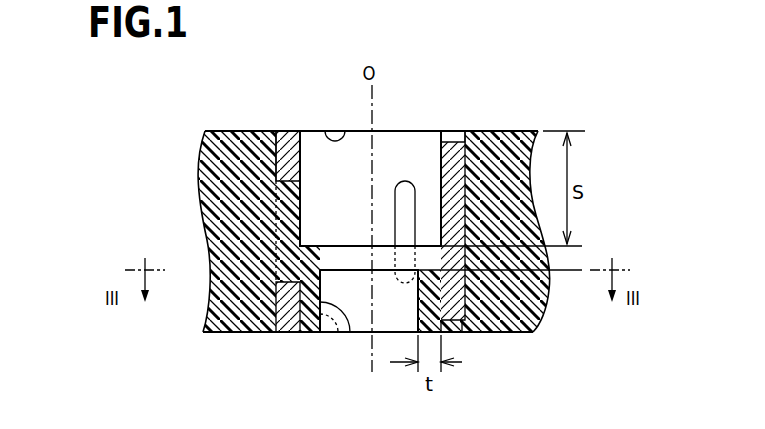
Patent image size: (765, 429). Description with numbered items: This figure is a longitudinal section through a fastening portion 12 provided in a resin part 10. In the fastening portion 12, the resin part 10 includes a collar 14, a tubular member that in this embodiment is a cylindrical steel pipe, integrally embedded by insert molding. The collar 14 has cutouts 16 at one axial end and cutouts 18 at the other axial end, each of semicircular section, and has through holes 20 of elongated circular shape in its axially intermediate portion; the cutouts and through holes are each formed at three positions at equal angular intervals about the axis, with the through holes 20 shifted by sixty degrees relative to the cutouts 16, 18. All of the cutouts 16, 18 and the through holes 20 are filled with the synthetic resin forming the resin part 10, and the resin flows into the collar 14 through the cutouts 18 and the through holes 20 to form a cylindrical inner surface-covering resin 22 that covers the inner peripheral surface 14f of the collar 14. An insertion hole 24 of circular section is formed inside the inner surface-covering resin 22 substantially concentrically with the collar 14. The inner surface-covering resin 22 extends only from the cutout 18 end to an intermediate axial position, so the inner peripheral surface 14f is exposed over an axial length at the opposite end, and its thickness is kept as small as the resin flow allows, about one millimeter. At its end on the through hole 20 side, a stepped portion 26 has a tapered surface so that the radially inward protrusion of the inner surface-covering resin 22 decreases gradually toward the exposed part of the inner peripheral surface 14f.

The resin part 10 is at (210, 163).
The fastening portion 12 is at (469, 74).
The collar 14 is at (292, 145).
The inner peripheral surface 14f is at (446, 131).
The cutouts 16 is at (335, 128).
The cutouts 18 is at (454, 325).
The through holes 20 is at (413, 198).
The inner surface-covering resin 22 is at (283, 334).
The insertion hole 24 is at (352, 333).
The stepped portion 26 is at (276, 218).